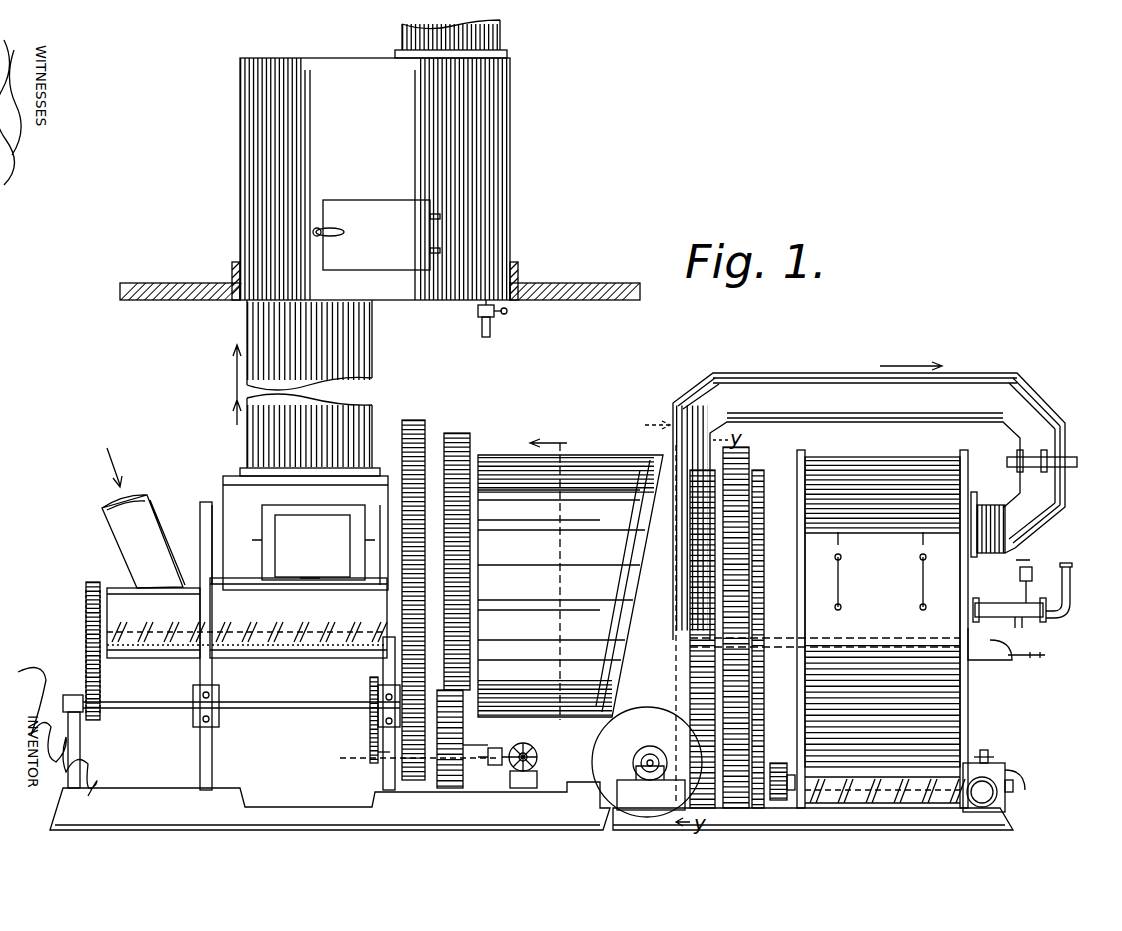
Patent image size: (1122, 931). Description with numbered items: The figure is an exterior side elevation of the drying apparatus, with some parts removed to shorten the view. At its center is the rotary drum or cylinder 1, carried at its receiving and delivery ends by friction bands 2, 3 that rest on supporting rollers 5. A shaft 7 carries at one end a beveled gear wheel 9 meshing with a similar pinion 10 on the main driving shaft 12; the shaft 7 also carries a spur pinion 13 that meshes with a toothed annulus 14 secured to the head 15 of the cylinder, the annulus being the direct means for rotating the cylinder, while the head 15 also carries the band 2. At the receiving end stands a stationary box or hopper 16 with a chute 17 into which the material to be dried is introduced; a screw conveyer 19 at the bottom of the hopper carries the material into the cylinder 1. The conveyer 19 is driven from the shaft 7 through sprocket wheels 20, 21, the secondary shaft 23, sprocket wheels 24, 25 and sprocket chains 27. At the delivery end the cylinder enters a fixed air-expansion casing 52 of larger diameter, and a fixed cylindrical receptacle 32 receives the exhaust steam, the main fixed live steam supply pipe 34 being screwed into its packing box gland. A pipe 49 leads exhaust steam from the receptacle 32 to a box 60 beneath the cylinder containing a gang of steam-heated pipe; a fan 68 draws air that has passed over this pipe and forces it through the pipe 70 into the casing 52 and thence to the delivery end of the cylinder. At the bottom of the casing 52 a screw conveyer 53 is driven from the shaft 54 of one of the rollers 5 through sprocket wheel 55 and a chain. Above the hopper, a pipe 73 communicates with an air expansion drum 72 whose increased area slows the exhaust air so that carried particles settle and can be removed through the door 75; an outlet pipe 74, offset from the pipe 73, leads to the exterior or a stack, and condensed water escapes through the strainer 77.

The rotary drum or cylinder 1 is at (603, 456).
The friction band 2 is at (430, 437).
The friction band 3 is at (749, 462).
The supporting rollers 5 is at (470, 745).
The shaft 7 is at (368, 753).
The beveled gear wheel 9 is at (535, 773).
The pinion 10 is at (537, 754).
The main driving shaft 12 is at (540, 790).
The spur pinion 13 is at (437, 772).
The toothed annulus 14 is at (412, 597).
The head 15 is at (473, 450).
The stationary box or hopper 16 is at (247, 618).
The chute 17 is at (127, 530).
The screw conveyer 19 is at (304, 660).
The sprocket wheel 20 is at (372, 752).
The sprocket wheel 21 is at (370, 689).
The secondary shaft 23 is at (272, 712).
The sprocket wheel 24 is at (98, 697).
The sprocket wheel 25 is at (86, 615).
The sprocket chains 27 is at (86, 664).
The fixed cylindrical receptacle 32 is at (1038, 578).
The main fixed live steam supply pipe 34 is at (1071, 590).
The pipe 49 is at (1012, 648).
The fixed air-expansion casing 52 is at (829, 629).
The screw conveyer 53 is at (955, 768).
The shaft 54 is at (768, 800).
The sprocket wheel 55 is at (776, 764).
The box 60 is at (651, 795).
The fan 68 is at (647, 762).
The pipe 70 is at (848, 380).
The air expansion drum 72 is at (375, 179).
The pipe 73 is at (352, 372).
The outlet pipe 74 is at (505, 46).
The door 75 is at (376, 235).
The strainer 77 is at (476, 306).